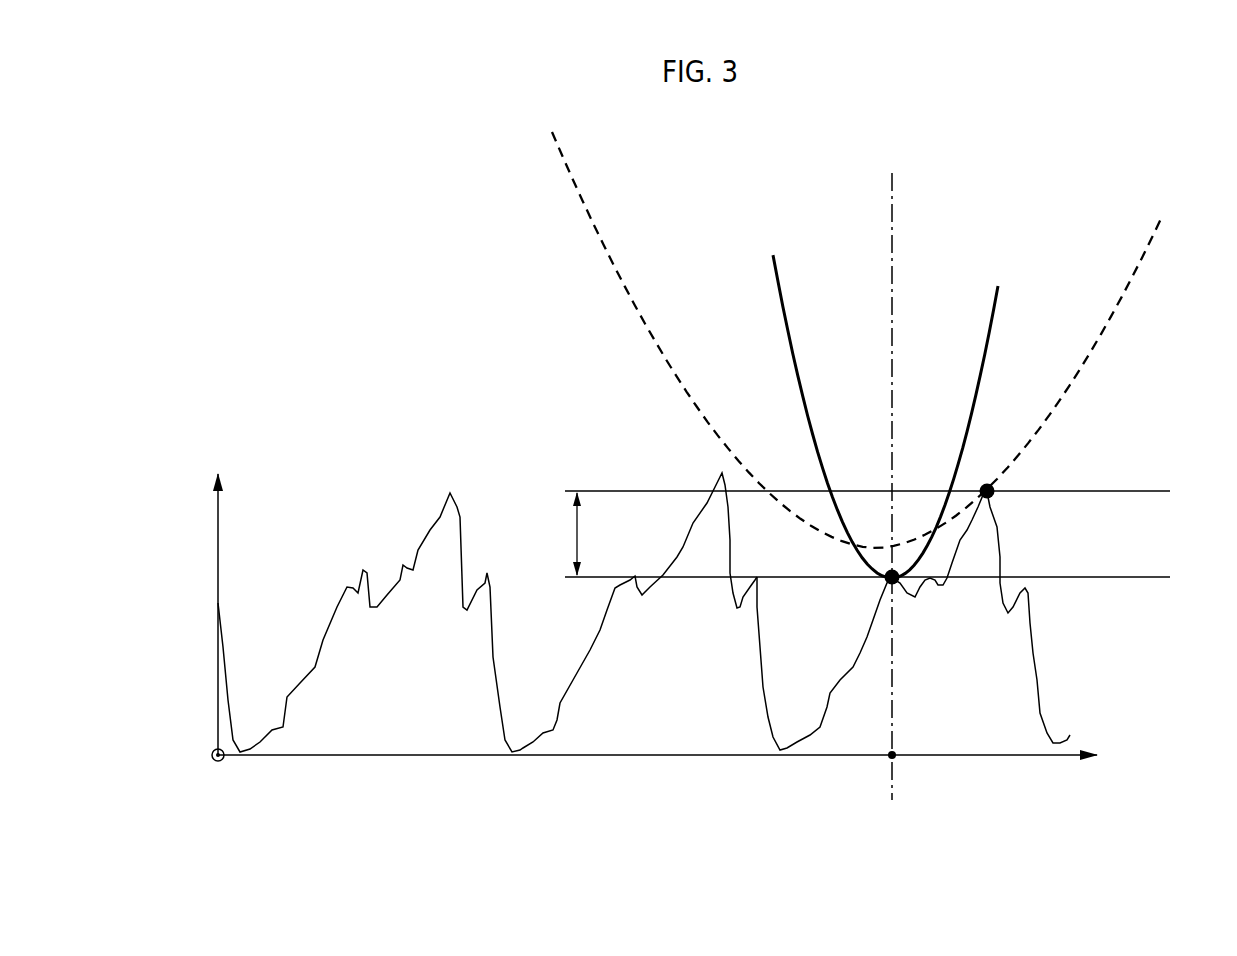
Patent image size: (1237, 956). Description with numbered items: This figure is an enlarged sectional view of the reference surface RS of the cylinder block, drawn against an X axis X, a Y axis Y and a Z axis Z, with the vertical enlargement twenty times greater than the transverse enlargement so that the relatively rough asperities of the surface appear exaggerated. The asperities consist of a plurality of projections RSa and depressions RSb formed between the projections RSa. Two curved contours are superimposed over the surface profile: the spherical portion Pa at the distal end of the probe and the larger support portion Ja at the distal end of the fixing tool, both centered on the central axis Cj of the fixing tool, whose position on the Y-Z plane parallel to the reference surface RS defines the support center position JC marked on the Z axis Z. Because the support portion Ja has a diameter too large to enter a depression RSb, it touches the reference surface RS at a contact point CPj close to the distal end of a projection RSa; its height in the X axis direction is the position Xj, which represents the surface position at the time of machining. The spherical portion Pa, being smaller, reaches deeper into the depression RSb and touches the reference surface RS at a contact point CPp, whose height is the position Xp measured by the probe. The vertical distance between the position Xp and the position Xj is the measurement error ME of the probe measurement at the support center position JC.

The reference surface RS is at (651, 576).
The projections RSa is at (1014, 517).
The depressions RSb is at (797, 652).
The spherical portion Pa is at (788, 340).
The support portion Ja is at (615, 272).
The central axis Cj is at (893, 210).
The contact point CPj is at (986, 484).
The contact point CPp is at (885, 580).
The measurement error ME is at (558, 534).
The position Xj is at (881, 492).
The position Xp is at (885, 579).
The support center position JC is at (875, 768).
The X-axis X is at (218, 601).
The Y-axis Y is at (215, 771).
The Z-axis Z is at (668, 756).